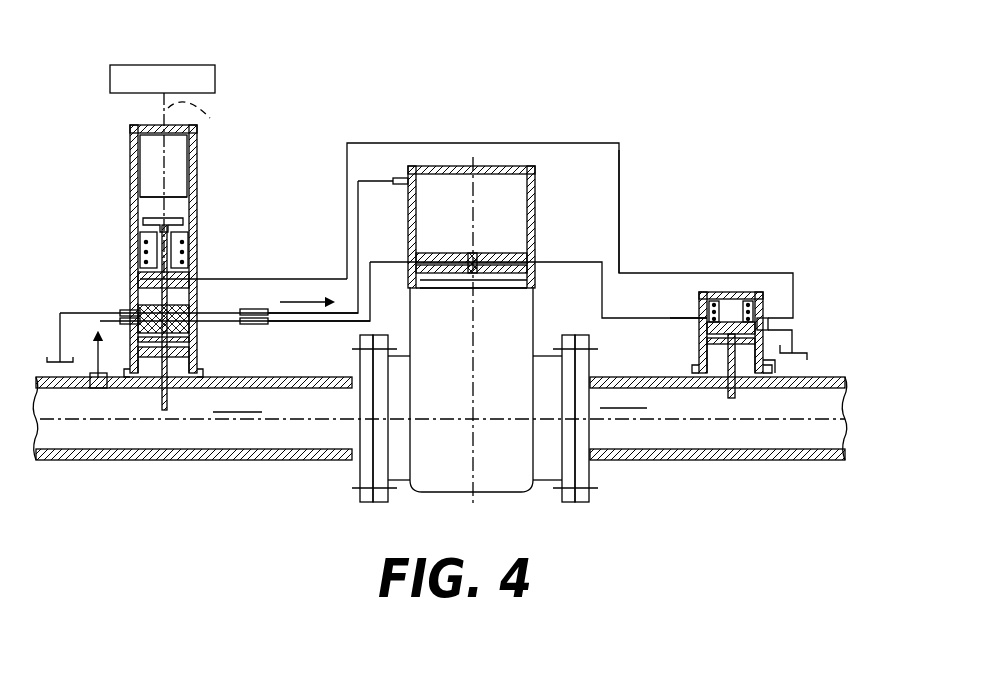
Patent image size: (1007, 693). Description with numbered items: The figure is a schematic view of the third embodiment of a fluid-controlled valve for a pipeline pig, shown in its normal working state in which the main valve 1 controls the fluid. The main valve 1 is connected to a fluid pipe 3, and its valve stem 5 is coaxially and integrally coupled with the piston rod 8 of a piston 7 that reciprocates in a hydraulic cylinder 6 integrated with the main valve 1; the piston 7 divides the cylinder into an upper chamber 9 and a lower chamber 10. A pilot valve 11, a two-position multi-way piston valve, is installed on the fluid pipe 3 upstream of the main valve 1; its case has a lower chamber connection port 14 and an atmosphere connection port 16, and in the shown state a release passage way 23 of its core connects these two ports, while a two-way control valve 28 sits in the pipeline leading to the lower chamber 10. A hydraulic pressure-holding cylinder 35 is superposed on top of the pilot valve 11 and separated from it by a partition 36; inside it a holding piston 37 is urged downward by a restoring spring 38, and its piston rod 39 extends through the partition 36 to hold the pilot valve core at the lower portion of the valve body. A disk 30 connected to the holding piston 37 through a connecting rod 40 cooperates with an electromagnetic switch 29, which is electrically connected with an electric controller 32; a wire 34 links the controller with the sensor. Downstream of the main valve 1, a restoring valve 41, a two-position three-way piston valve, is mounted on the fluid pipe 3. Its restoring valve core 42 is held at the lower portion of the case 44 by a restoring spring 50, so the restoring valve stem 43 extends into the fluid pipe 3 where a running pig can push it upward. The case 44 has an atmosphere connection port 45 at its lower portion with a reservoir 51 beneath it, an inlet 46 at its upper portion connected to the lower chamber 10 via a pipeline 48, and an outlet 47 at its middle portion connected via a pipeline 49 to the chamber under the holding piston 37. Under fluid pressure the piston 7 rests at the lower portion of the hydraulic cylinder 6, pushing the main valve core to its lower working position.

The main valve 1 is at (444, 473).
The fluid pipe 3 is at (668, 446).
The valve stem 5 is at (460, 288).
The hydraulic cylinder 6 is at (507, 162).
The piston 7 is at (440, 250).
The piston rod 8 is at (474, 262).
The upper chamber 9 is at (514, 202).
The lower chamber 10 is at (522, 262).
The pilot valve 11 is at (130, 304).
The lower chamber connection port 14 is at (214, 322).
The atmosphere connection port 16 is at (100, 320).
The release passage way 23 is at (182, 344).
The two-way control valve 28 is at (254, 316).
The electromagnetic switch 29 is at (182, 166).
The disk 30 is at (148, 224).
The electric controller 32 is at (216, 73).
The wire 34 is at (210, 118).
The hydraulic pressure-holding cylinder 35 is at (188, 242).
The partition 36 is at (198, 286).
The holding piston 37 is at (190, 264).
The restoring spring 38 is at (140, 256).
The piston rod 39 is at (140, 281).
The connecting rod 40 is at (143, 224).
The restoring valve 41 is at (698, 360).
The restoring valve core 42 is at (706, 336).
The restoring valve stem 43 is at (736, 400).
The case 44 is at (746, 300).
The atmosphere connection port 45 is at (772, 372).
The inlet 46 is at (682, 310).
The outlet 47 is at (784, 328).
The pipeline 48 is at (626, 318).
The pipeline 49 is at (631, 272).
The restoring spring 50 is at (716, 301).
The reservoir 51 is at (808, 356).